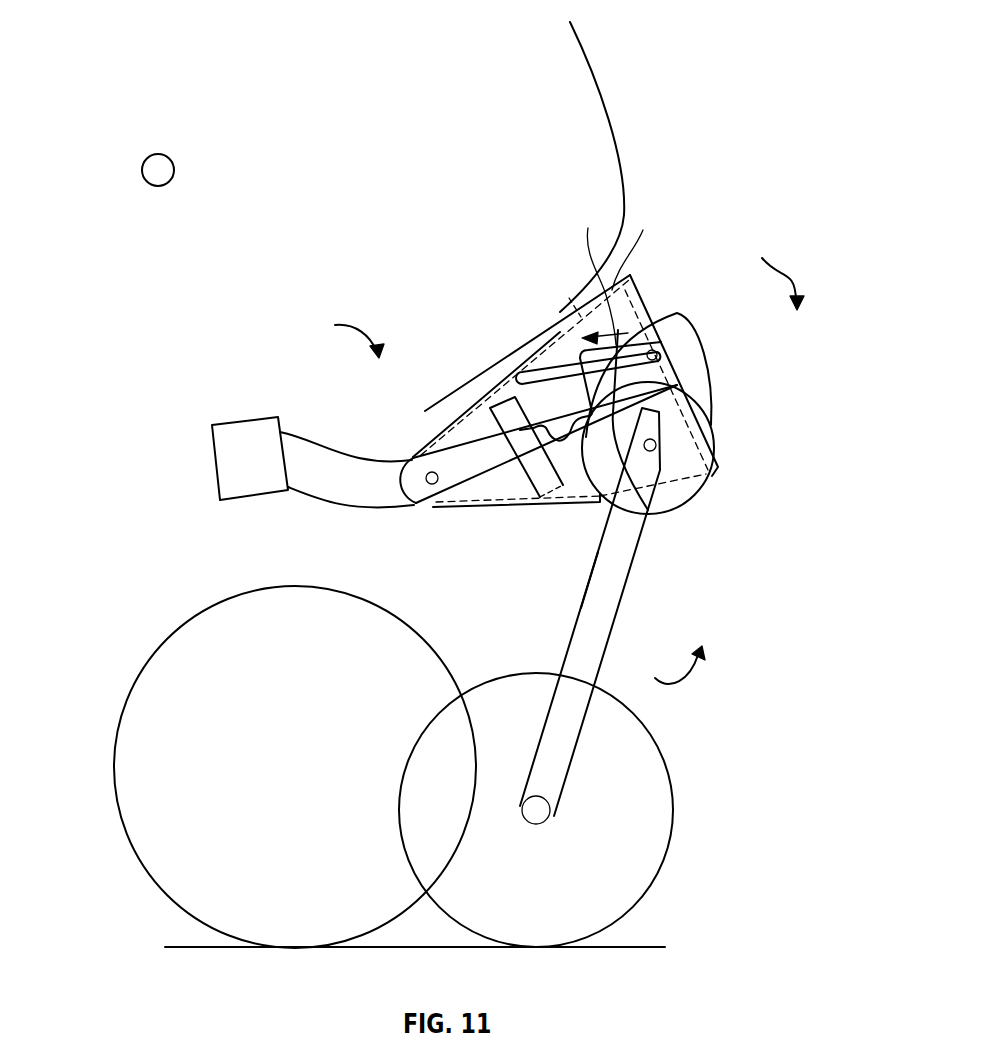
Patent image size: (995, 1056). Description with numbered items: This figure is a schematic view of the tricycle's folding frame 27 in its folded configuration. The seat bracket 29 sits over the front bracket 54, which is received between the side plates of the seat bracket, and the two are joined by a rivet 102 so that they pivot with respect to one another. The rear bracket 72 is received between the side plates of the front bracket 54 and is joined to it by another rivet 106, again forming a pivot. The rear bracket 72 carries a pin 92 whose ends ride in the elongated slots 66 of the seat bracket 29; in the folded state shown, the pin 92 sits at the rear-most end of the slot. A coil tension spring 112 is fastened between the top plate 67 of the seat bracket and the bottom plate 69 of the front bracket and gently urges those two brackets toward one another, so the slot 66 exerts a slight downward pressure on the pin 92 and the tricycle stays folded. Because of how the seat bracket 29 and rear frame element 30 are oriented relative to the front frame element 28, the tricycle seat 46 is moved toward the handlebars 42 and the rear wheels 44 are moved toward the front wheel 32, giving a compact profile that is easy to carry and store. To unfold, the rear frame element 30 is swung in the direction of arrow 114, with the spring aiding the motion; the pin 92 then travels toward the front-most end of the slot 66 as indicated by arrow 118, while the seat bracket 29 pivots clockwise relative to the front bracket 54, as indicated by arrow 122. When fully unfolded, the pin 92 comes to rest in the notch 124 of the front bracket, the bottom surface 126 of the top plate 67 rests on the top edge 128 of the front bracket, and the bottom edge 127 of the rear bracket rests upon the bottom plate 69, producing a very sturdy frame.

The frame 27 is at (337, 334).
The front frame element 28 is at (300, 437).
The seat bracket 29 is at (684, 338).
The rear frame element 30 is at (628, 580).
The front wheel 32 is at (113, 757).
The handlebars 42 is at (143, 178).
The rear wheels 44 is at (674, 827).
The tricycle seat 46 is at (612, 122).
The front bracket 54 is at (580, 504).
The elongated slot 66 is at (533, 342).
The top plate 67 is at (637, 243).
The bottom plate 69 is at (508, 507).
The rear bracket 72 is at (715, 463).
The pin 92 is at (658, 348).
The rivet 102 is at (428, 485).
The rivet 106 is at (656, 439).
The coil tension spring 112 is at (448, 408).
The arrow 114 is at (700, 679).
The arrow 118 is at (593, 271).
The arrow 122 is at (819, 278).
The notch 124 is at (643, 508).
The bottom surface 126 is at (560, 286).
The bottom edge 127 is at (492, 358).
The top edge 128 is at (645, 322).